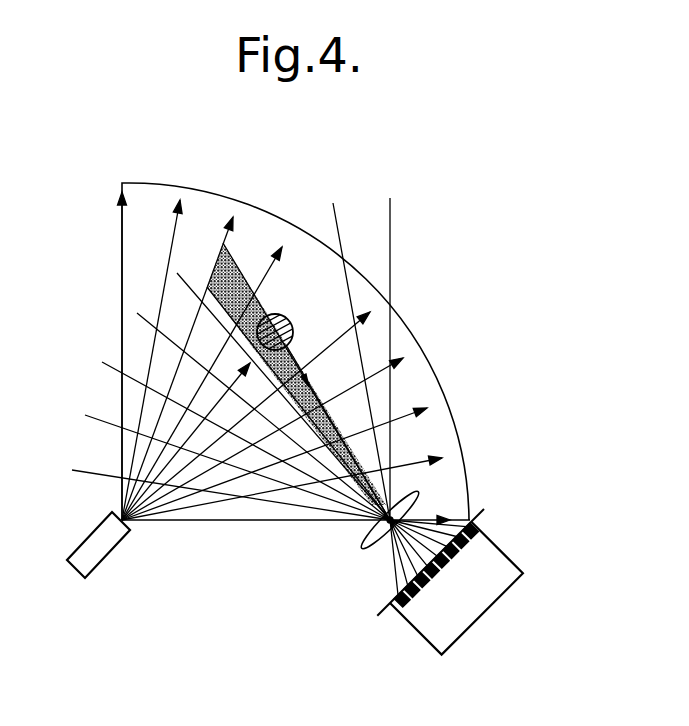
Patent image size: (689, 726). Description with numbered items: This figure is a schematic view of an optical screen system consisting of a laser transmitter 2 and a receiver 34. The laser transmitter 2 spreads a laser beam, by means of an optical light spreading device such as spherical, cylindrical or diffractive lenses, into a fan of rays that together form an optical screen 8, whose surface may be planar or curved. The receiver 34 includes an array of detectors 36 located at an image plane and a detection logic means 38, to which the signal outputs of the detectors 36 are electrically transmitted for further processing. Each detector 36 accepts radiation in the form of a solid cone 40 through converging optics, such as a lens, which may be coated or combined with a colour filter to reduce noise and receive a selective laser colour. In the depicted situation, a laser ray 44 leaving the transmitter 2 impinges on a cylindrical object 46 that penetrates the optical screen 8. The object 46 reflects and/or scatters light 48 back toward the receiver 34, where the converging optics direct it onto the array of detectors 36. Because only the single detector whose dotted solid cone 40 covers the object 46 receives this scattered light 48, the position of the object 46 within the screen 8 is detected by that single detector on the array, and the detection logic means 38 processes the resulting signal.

The laser transmitter 2 is at (100, 540).
The screen 8 is at (214, 192).
The receiver 34 is at (499, 603).
The array of detectors 36 is at (440, 560).
The detection logic means 38 is at (495, 603).
The solid cone 40 is at (340, 450).
The laser ray 44 is at (218, 407).
The cylindrical object 46 is at (290, 318).
The reflected and/or scattered light 48 is at (307, 401).